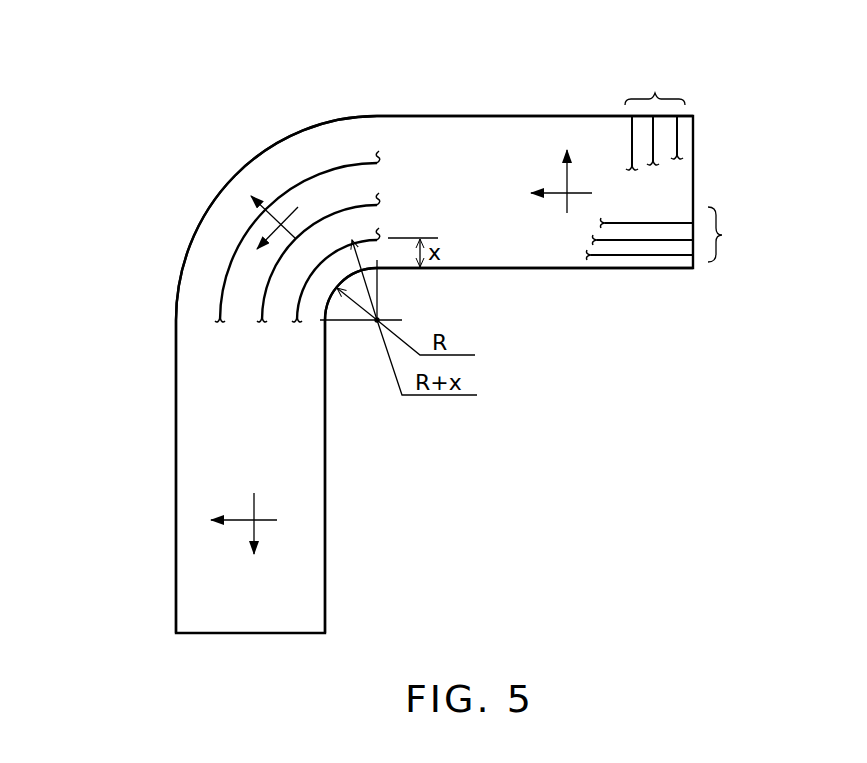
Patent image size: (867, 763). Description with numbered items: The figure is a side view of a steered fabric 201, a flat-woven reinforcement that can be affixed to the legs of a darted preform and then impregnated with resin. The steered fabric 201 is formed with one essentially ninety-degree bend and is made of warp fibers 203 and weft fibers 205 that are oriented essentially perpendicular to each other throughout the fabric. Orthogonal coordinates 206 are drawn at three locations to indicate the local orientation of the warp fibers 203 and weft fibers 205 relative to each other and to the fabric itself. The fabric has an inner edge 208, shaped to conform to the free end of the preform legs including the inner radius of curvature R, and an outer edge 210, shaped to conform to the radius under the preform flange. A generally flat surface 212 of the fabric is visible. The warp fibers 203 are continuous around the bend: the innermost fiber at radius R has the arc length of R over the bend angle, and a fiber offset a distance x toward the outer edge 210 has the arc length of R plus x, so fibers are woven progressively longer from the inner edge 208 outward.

The steered fabric 201 is at (362, 98).
The warp fibers 203 is at (358, 162).
The weft fibers 205 is at (655, 113).
The orthogonal coordinates 206 is at (552, 162).
The inner edge 208 is at (530, 268).
The outer edge 210 is at (473, 115).
The flat surface 212 is at (237, 378).